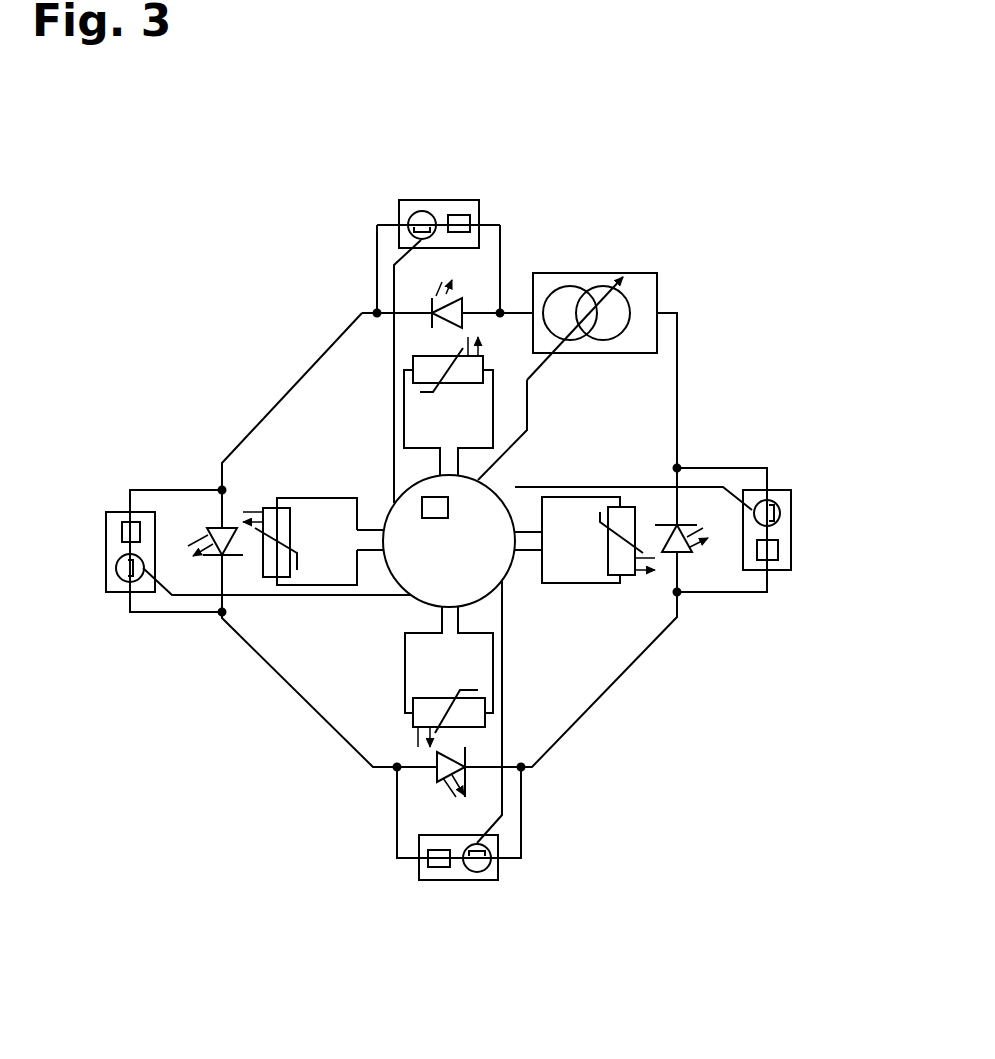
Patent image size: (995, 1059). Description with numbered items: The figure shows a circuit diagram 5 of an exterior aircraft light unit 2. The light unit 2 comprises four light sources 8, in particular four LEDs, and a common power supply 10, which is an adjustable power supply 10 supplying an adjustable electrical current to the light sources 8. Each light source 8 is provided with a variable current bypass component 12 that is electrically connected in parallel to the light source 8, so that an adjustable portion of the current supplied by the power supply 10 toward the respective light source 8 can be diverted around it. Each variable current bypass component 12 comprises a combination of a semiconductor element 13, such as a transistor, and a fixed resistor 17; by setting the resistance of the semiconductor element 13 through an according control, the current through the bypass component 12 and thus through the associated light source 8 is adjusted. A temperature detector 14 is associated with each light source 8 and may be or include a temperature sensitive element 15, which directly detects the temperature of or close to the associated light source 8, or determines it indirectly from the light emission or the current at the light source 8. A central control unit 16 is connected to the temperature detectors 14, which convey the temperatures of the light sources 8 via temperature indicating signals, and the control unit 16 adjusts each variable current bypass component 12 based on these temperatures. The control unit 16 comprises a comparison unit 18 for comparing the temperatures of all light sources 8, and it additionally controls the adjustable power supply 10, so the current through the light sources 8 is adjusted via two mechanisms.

The exterior aircraft light unit 2 is at (178, 165).
The circuit diagram 5 is at (685, 130).
The light source 8 is at (474, 302).
The common power supply 10 is at (623, 257).
The variable current bypass component 12 is at (437, 192).
The semiconductor element 13 is at (418, 214).
The temperature detector 14 is at (502, 400).
The temperature sensitive element 15 is at (477, 362).
The central control unit 16 is at (422, 602).
The fixed resistor 17 is at (458, 217).
The comparison unit 18 is at (430, 505).